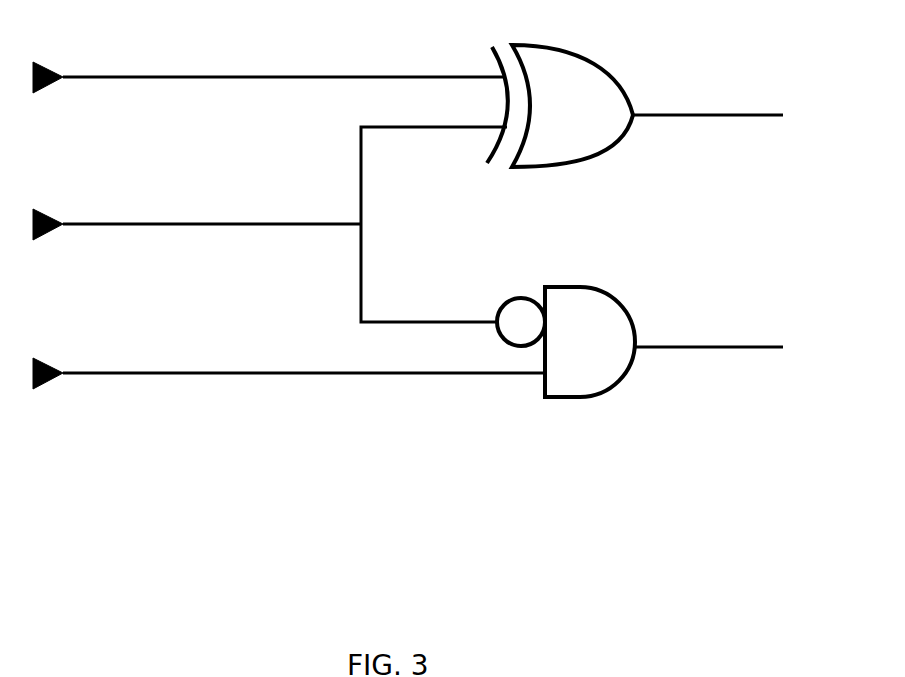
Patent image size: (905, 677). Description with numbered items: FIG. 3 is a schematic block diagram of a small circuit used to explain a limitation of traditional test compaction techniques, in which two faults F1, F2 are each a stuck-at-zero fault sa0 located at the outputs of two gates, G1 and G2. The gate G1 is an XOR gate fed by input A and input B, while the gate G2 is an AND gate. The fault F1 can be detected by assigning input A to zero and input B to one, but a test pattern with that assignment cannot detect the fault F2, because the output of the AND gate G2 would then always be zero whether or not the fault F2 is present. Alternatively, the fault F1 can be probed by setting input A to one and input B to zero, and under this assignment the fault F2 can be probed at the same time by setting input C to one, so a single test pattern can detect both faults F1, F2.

The input A is at (268, 60).
The input B is at (270, 224).
The input C is at (289, 362).
The XOR gate G1 is at (560, 90).
The AND gate G2 is at (566, 324).
The fault F1 is at (734, 108).
The fault F2 is at (735, 339).
The stuck-at-0 fault sa0 is at (662, 94).